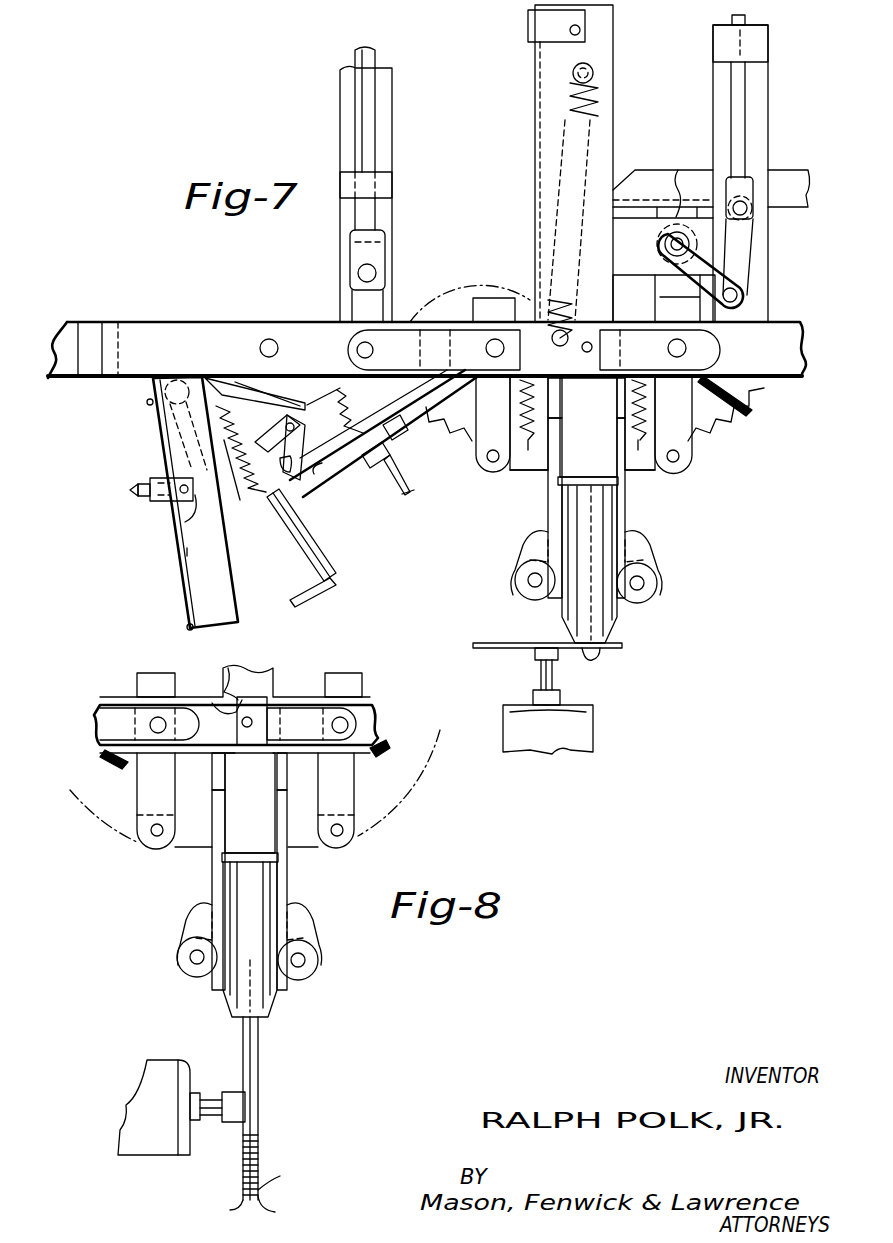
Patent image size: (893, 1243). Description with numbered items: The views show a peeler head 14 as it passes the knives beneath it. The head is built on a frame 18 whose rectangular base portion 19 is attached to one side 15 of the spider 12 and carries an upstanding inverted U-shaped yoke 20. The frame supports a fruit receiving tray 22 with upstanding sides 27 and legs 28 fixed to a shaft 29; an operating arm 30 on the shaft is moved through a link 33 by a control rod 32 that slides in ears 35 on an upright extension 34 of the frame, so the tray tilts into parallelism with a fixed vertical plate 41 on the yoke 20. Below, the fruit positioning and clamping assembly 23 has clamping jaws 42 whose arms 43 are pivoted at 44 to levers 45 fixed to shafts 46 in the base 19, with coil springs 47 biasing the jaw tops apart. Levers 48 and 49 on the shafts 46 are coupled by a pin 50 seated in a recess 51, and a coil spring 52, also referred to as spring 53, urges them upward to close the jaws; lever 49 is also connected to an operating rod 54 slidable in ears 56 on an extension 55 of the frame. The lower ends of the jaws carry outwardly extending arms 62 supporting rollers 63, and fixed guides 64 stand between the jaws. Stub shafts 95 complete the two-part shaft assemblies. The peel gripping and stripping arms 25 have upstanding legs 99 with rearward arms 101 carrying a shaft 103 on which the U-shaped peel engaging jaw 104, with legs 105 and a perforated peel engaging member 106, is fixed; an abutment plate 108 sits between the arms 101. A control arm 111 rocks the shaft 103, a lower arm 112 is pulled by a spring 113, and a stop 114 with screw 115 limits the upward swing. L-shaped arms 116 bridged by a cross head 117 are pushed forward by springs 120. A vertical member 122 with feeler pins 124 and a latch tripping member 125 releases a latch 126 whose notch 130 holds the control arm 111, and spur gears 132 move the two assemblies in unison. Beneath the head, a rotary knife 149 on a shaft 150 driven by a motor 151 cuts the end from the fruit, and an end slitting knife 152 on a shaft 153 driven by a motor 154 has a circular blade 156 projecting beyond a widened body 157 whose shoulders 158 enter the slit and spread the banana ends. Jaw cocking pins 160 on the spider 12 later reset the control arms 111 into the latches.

In FIG. 7, the spider 12 is at (90, 322).
In FIG. 7, the peeler head 14 is at (424, 572).
In FIG. 7, the side of spider 15 is at (118, 325).
In FIG. 7, the frame 18 is at (778, 292).
In FIG. 7, the rectangular base portion 19 is at (310, 324).
In FIG. 8, the rectangular base portion 19 is at (370, 714).
In FIG. 7, the inverted U-shaped yoke 20 is at (598, 116).
In FIG. 8, the inverted U-shaped yoke 20 is at (270, 672).
In FIG. 7, the fruit receiving tray 22 is at (800, 158).
In FIG. 7, the fruit positioning and clamping assembly 23 is at (640, 522).
In FIG. 8, the fruit positioning and clamping assembly 23 is at (310, 872).
In FIG. 7, the peel gripping and stripping arms 25 is at (168, 583).
In FIG. 7, the upstanding sides 27 is at (646, 172).
In FIG. 7, the legs 28 is at (680, 178).
In FIG. 7, the shaft 29 is at (664, 244).
In FIG. 7, the operating arm 30 is at (680, 270).
In FIG. 7, the control rod 32 is at (745, 108).
In FIG. 7, the link 33 is at (745, 245).
In FIG. 7, the upright extension 34 is at (762, 76).
In FIG. 7, the spaced ears 35 is at (713, 45).
In FIG. 7, the fixed vertical plate 41 is at (535, 84).
In FIG. 7, the clamping and positioning jaws 42 is at (548, 524).
In FIG. 8, the clamping and positioning jaws 42 is at (212, 896).
In FIG. 7, the arms 43 is at (526, 472).
In FIG. 8, the arms 43 is at (190, 852).
In FIG. 7, the pivotal connection 44 is at (494, 462).
In FIG. 8, the pivotal connection 44 is at (152, 838).
In FIG. 7, the levers 45 is at (476, 416).
In FIG. 8, the levers 45 is at (137, 784).
In FIG. 7, the shafts 46 is at (476, 352).
In FIG. 8, the shafts 46 is at (120, 726).
In FIG. 7, the coil springs 47 is at (514, 416).
In FIG. 7, the lever 48 is at (636, 332).
In FIG. 8, the lever 48 is at (298, 706).
In FIG. 7, the lever 49 is at (418, 332).
In FIG. 8, the lever 49 is at (186, 700).
In FIG. 7, the pin 50 is at (570, 334).
In FIG. 8, the pin 50 is at (256, 700).
In FIG. 7, the recess 51 is at (583, 380).
In FIG. 8, the recess 51 is at (244, 745).
In FIG. 7, the coil spring 52 is at (595, 88).
In FIG. 8, the coil spring 52 is at (232, 668).
In FIG. 7, the spring 53 is at (385, 285).
In FIG. 7, the operating rod 54 is at (375, 124).
In FIG. 7, the extension 55 is at (392, 82).
In FIG. 7, the ears 56 is at (392, 188).
In FIG. 7, the outwardly extending arms 62 is at (524, 552).
In FIG. 8, the outwardly extending arms 62 is at (194, 928).
In FIG. 7, the rollers 63 is at (514, 582).
In FIG. 8, the rollers 63 is at (177, 958).
In FIG. 7, the fixed guides 64 is at (594, 606).
In FIG. 8, the fixed guides 64 is at (254, 986).
In FIG. 7, the stub shaft 95 is at (668, 348).
In FIG. 8, the stub shaft 95 is at (330, 726).
In FIG. 7, the upstanding legs 99 is at (756, 396).
In FIG. 8, the upstanding legs 99 is at (100, 752).
In FIG. 7, the arms 101 is at (250, 498).
In FIG. 7, the shaft 103 is at (165, 386).
In FIG. 7, the U-shaped member 104 is at (162, 541).
In FIG. 7, the legs 105 is at (187, 554).
In FIG. 7, the peel engaging member 106 is at (188, 630).
In FIG. 7, the abutment plate 108 is at (246, 388).
In FIG. 7, the control arm 111 is at (258, 390).
In FIG. 7, the lower arm 112 is at (147, 404).
In FIG. 7, the spring 113 is at (152, 420).
In FIG. 7, the stop 114 is at (180, 520).
In FIG. 7, the adjustable screw 115 is at (130, 500).
In FIG. 7, the L-shaped arms 116 is at (292, 530).
In FIG. 7, the cross head 117 is at (304, 580).
In FIG. 7, the springs 120 is at (270, 450).
In FIG. 7, the vertical member 122 is at (340, 468).
In FIG. 7, the feeler pins 124 is at (410, 504).
In FIG. 7, the latch tripping member 125 is at (350, 430).
In FIG. 7, the latch 126 is at (318, 378).
In FIG. 7, the notch 130 is at (326, 396).
In FIG. 7, the spur gears 132 is at (740, 428).
In FIG. 8, the spur gears 132 is at (80, 790).
In FIG. 7, the rotary knife 149 is at (496, 642).
In FIG. 7, the shaft 150 is at (552, 682).
In FIG. 7, the motor 151 is at (593, 730).
In FIG. 8, the end slitting knife 152 is at (260, 1142).
In FIG. 8, the shaft 153 is at (212, 1118).
In FIG. 8, the motor 154 is at (152, 1145).
In FIG. 8, the circular blade 156 is at (268, 1210).
In FIG. 8, the widened body 157 is at (260, 1082).
In FIG. 8, the shoulders 158 is at (240, 1204).
In FIG. 7, the jaw cocking pins 160 is at (259, 347).